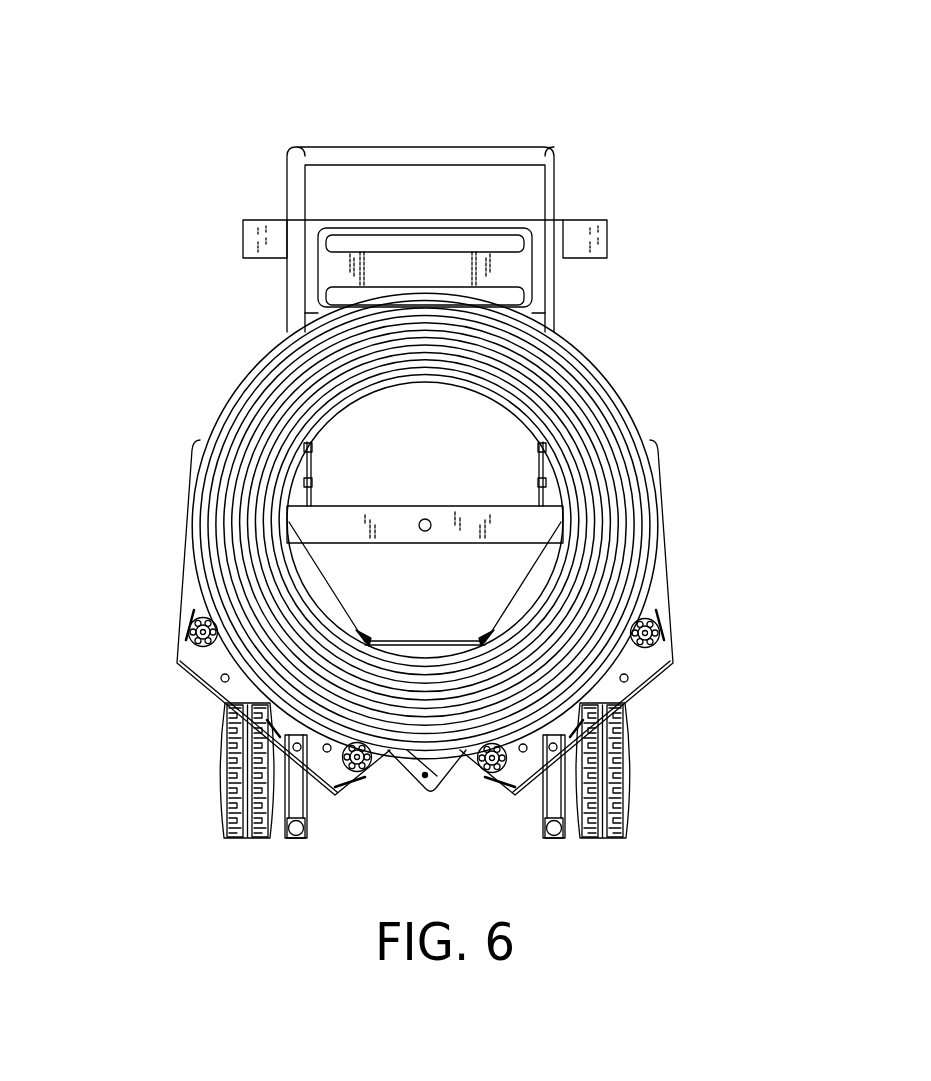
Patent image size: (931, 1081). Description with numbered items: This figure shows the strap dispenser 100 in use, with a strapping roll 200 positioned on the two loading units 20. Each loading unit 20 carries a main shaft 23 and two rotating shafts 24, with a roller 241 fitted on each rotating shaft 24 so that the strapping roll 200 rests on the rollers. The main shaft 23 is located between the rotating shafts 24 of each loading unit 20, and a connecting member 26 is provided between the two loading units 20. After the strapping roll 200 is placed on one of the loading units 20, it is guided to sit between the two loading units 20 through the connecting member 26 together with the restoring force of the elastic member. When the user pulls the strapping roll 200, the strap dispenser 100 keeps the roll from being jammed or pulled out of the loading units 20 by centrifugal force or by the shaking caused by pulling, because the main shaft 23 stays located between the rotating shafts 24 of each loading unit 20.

The strap dispenser 100 is at (430, 140).
The strapping roll 200 is at (630, 384).
The loading unit 20 is at (166, 553).
The main shaft 23 is at (256, 745).
The rotating shaft 24 is at (668, 637).
The roller 241 is at (661, 613).
The connecting member 26 is at (412, 768).